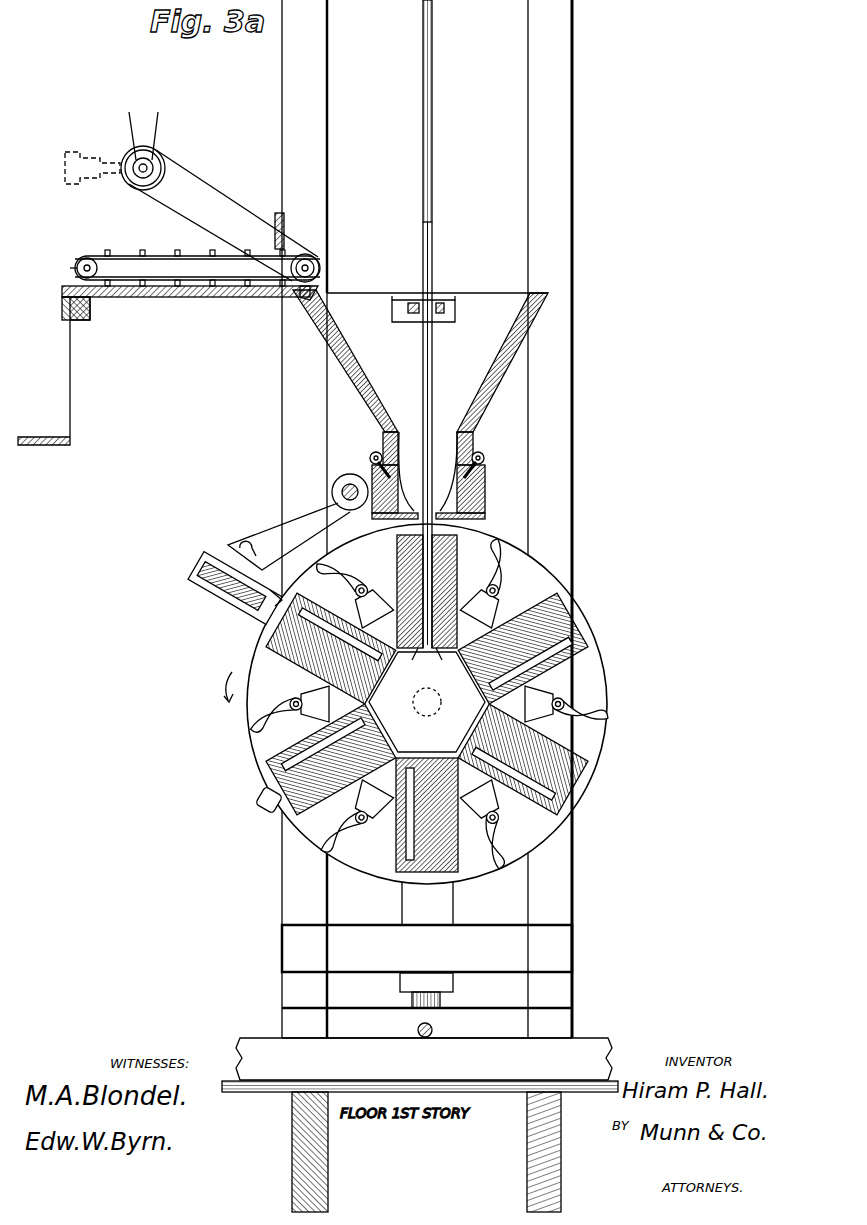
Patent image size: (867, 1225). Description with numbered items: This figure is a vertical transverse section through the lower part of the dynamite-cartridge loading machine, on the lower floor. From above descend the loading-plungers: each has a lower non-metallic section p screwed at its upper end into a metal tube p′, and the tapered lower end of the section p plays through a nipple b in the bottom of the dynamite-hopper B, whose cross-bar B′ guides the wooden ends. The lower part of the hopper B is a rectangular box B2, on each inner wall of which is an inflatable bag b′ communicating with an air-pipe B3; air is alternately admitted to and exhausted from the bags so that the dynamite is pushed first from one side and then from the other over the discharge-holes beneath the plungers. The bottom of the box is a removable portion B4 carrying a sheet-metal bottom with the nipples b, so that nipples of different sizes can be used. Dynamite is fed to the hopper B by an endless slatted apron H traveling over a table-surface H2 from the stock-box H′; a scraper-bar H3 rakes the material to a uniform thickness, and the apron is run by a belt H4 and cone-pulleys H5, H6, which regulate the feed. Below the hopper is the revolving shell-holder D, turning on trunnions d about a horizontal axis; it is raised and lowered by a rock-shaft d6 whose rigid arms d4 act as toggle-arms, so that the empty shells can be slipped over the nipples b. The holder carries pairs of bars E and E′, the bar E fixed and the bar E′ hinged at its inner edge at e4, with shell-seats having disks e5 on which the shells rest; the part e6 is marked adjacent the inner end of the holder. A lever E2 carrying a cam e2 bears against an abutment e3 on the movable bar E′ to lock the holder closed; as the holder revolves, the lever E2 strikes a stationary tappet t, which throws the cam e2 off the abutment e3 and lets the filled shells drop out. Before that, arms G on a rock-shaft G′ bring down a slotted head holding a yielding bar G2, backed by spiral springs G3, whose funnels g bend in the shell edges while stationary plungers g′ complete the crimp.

The metal tube p′ is at (432, 126).
The non-metallic plunger section p is at (434, 360).
The dynamite-hopper B is at (372, 364).
The cross-bar B′ is at (436, 300).
The rectangular box B2 is at (398, 435).
The air-pipe B3 is at (370, 455).
The removable bottom portion B4 is at (485, 494).
The nipple b is at (470, 524).
The inflatable bag b′ is at (443, 435).
The endless slatted apron H is at (140, 245).
The stock-box H′ is at (62, 360).
The table-surface H2 is at (200, 297).
The scraper-bar H3 is at (284, 215).
The belt H4 is at (220, 190).
The cone-pulley H5 is at (158, 152).
The cone-pulley H6 is at (322, 260).
The revolving shell-holder D is at (427, 704).
The trunnion d is at (427, 702).
The fixed bar E is at (396, 608).
The hinged bar E′ is at (457, 548).
The lever E2 is at (429, 707).
The cam e2 is at (490, 585).
The abutment e3 is at (427, 704).
The hinge e4 is at (443, 661).
The disk e5 is at (473, 735).
The stop e6 is at (410, 661).
The arm G is at (289, 536).
The rock-shaft G′ is at (334, 486).
The yielding bar G2 is at (242, 612).
The spiral spring G3 is at (215, 598).
The funnel g is at (300, 590).
The stationary plunger g′ is at (270, 587).
The stationary tappet t is at (262, 806).
The rigid arm d4 is at (442, 1000).
The rock-shaft d6 is at (433, 1028).